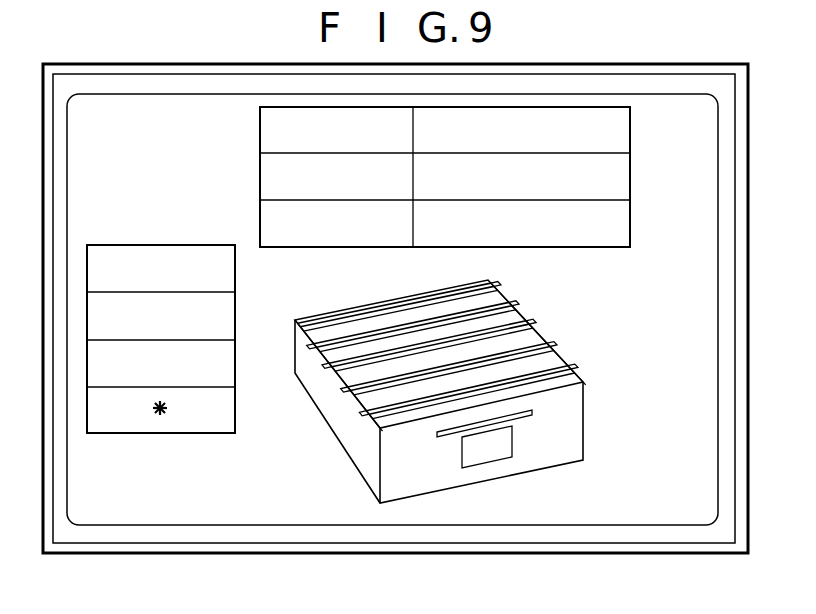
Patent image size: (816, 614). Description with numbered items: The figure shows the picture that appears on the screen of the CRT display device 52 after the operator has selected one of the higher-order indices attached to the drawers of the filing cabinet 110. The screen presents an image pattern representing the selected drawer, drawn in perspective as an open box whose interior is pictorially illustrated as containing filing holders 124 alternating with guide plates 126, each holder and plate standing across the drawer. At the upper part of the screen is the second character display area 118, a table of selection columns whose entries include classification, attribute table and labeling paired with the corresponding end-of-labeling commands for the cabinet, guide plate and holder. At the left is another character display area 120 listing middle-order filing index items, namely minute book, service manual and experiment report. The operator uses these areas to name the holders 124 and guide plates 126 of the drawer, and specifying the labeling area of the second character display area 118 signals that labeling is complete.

The CRT display device 52 is at (733, 574).
The filing cabinet 110 is at (546, 457).
The second character display area 118 is at (630, 237).
The character display area 120 is at (196, 433).
The filing holders 124 is at (496, 287).
The guide plates 126 is at (520, 303).